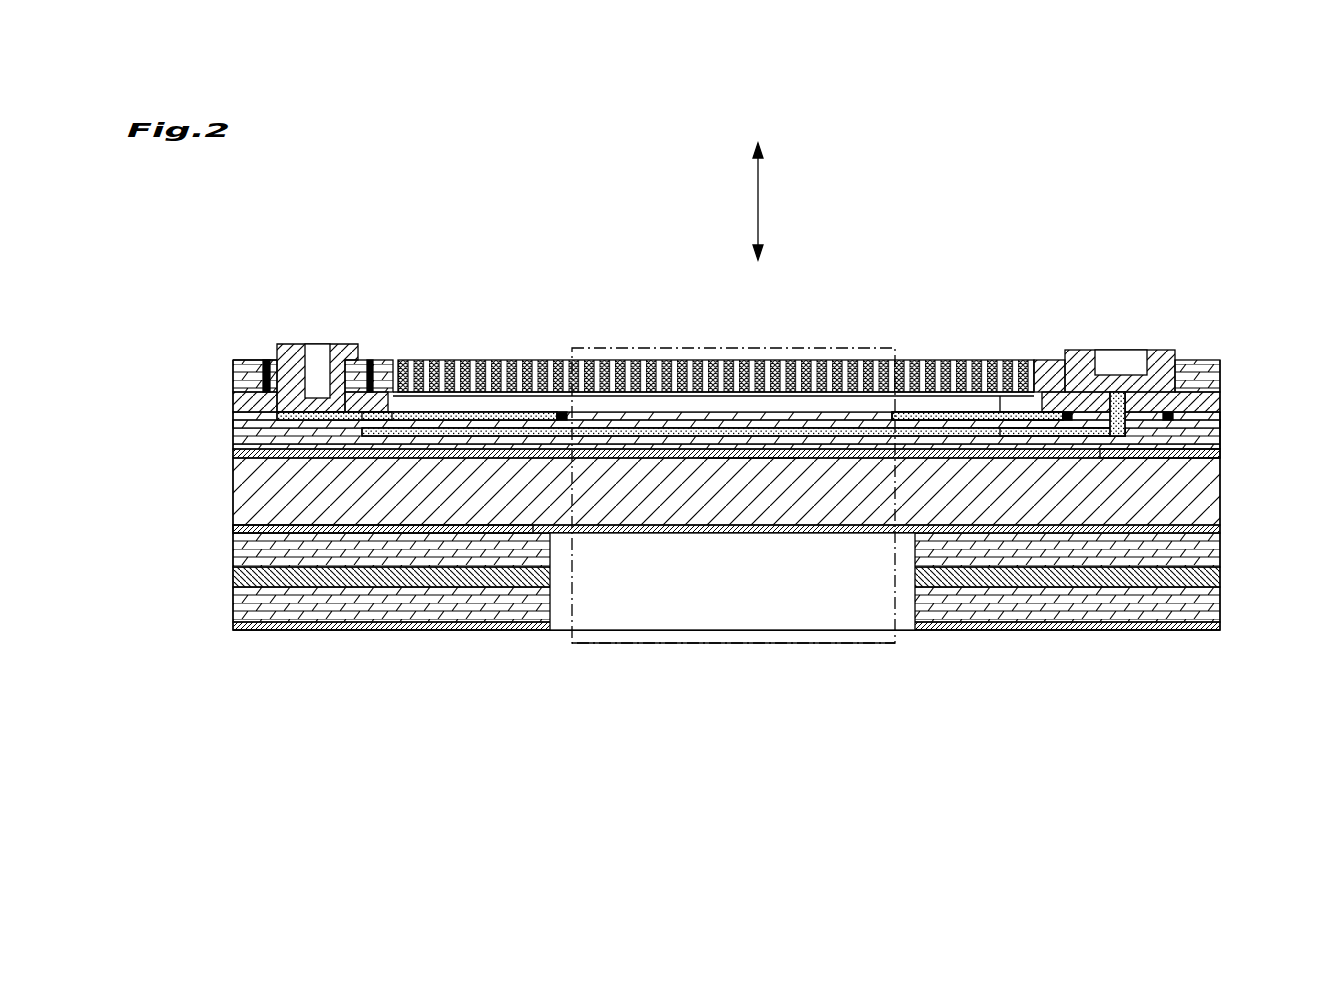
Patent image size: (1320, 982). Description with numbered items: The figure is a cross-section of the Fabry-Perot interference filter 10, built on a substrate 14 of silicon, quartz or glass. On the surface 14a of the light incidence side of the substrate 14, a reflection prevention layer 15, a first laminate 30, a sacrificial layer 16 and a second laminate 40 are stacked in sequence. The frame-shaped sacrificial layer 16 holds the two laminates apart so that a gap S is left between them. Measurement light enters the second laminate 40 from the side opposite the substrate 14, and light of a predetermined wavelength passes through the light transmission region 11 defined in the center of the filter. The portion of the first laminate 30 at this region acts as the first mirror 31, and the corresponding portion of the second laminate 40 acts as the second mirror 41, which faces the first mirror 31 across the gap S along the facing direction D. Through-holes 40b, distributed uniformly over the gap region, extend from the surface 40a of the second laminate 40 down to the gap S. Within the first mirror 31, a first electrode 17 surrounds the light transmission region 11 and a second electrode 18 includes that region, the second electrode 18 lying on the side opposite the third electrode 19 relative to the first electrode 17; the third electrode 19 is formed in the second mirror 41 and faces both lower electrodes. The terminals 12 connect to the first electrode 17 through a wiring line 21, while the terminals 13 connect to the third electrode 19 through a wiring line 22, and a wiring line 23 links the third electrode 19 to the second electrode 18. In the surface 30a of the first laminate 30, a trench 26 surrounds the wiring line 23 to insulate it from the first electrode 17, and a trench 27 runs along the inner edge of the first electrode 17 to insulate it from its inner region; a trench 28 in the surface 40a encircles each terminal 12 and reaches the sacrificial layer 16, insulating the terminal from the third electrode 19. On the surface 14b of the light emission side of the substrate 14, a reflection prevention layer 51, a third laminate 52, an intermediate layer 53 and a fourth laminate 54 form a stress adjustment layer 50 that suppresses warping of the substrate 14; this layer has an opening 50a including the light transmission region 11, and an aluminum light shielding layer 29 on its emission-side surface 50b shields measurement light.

The Fabry-Perot interference filter 10 is at (1117, 208).
The light transmission region 11 is at (710, 645).
The terminal 12 is at (318, 351).
The terminal 13 is at (1108, 349).
The substrate 14 is at (665, 522).
The surface of light incidence side of substrate 14a is at (236, 456).
The surface of light emission side of substrate 14b is at (250, 530).
The reflection prevention layer 15 is at (1182, 460).
The sacrificial layer 16 is at (1177, 411).
The first electrode 17 is at (968, 412).
The second electrode 18 is at (440, 424).
The third electrode 19 is at (493, 432).
The wiring line 21 is at (367, 421).
The wiring line 22 is at (1058, 388).
The wiring line 23 is at (1082, 437).
The trench 26 is at (1168, 392).
The trench 27 is at (903, 414).
The trench 28 is at (266, 359).
The light shielding layer 29 is at (437, 631).
The first laminate 30 is at (1228, 416).
The surface of first laminate 30a is at (1218, 411).
The first mirror 31 is at (748, 456).
The second laminate 40 is at (230, 358).
The surface of second laminate 40a is at (251, 359).
The through-hole 40b is at (590, 389).
The second mirror 41 is at (710, 350).
The stress adjustment layer 50 is at (744, 615).
The opening 50a is at (912, 627).
The surface of light emission side of stress adjustment layer 50b is at (493, 631).
The reflection prevention layer 51 is at (1221, 530).
The third laminate 52 is at (1227, 538).
The intermediate layer 53 is at (1221, 579).
The fourth laminate 54 is at (1227, 592).
The gap S is at (1015, 407).
The facing direction D is at (758, 204).